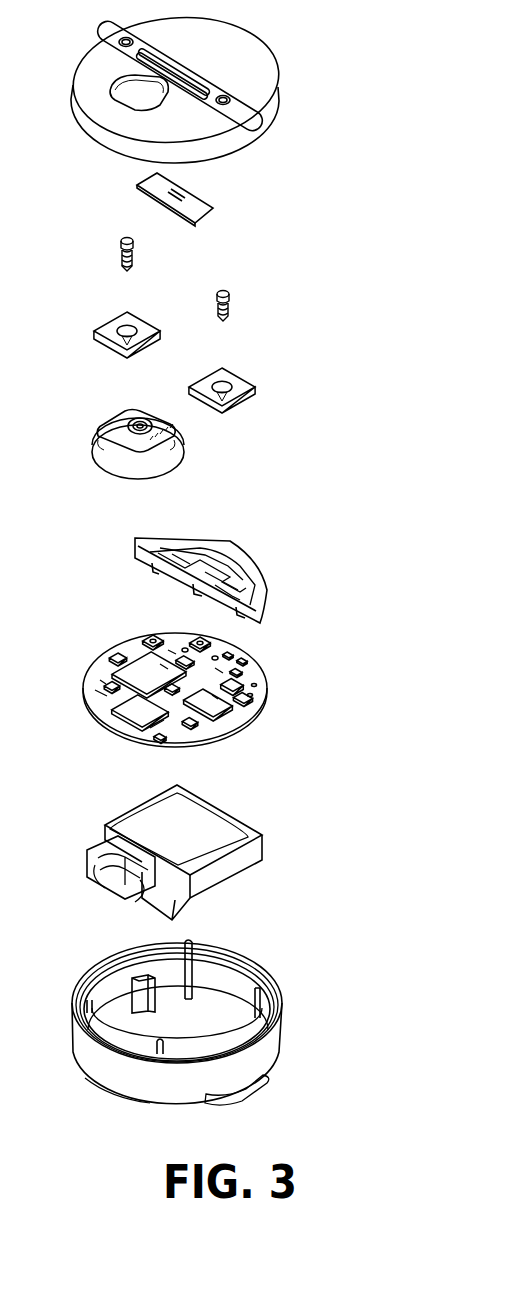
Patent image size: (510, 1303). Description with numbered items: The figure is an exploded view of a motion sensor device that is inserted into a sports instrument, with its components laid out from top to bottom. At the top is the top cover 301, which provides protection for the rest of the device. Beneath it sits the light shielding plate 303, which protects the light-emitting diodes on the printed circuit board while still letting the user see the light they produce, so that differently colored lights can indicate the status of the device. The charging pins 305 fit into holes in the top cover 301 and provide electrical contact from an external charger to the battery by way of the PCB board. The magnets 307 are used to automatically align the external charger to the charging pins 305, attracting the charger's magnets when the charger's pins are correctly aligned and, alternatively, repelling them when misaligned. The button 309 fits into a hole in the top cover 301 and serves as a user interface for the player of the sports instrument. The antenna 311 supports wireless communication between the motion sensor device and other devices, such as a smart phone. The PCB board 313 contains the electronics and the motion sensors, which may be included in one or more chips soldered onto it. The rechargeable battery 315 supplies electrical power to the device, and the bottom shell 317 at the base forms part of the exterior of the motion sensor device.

The top cover 301 is at (275, 105).
The light shielding plate 303 is at (213, 208).
The charging pins 305 is at (232, 312).
The magnets 307 is at (253, 395).
The button 309 is at (182, 450).
The antenna 311 is at (267, 592).
The PCB board 313 is at (262, 703).
The rechargeable battery 315 is at (262, 865).
The bottom shell 317 is at (280, 1033).